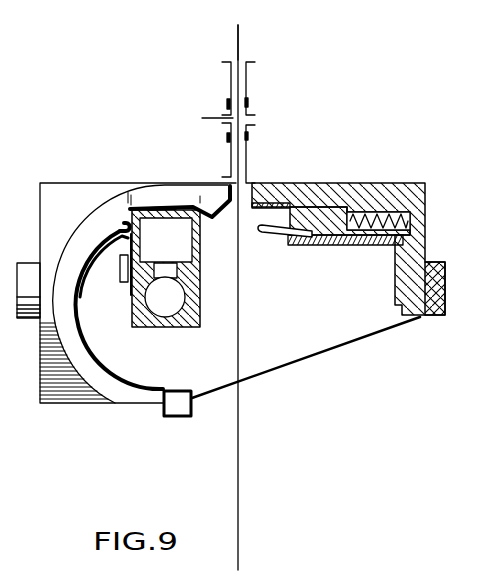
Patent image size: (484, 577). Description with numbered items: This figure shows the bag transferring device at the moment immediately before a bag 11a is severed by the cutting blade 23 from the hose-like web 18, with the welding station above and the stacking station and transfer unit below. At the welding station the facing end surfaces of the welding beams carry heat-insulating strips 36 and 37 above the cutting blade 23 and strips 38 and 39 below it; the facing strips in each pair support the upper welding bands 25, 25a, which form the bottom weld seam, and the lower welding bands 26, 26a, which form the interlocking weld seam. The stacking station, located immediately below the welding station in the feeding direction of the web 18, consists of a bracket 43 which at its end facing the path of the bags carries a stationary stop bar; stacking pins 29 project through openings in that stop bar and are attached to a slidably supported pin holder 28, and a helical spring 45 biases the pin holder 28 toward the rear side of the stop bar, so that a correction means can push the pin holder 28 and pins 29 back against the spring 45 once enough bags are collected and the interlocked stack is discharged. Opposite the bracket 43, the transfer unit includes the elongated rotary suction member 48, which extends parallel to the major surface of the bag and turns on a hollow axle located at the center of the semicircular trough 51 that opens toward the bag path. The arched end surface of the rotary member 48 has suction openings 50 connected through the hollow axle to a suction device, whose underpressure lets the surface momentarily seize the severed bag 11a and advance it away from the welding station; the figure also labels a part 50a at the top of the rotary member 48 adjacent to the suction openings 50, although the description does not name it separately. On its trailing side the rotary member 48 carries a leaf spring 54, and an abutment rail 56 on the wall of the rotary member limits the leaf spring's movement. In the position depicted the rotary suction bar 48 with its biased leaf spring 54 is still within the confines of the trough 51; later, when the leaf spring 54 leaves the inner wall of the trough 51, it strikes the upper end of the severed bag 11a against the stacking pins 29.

The bag 11a is at (240, 432).
The hose-like web 18 is at (240, 50).
The cutting blade 23 is at (202, 118).
The upper welding band 25 is at (227, 103).
The upper welding band 25a is at (248, 102).
The lower welding band 26 is at (227, 138).
The lower welding band 26a is at (248, 135).
The pin holder 28 is at (327, 218).
The stacking pins 29 is at (267, 240).
The insulating strip 36 is at (223, 73).
The insulating strip 37 is at (248, 75).
The insulating strip 38 is at (223, 163).
The insulating strip 39 is at (248, 162).
The bracket 43 is at (415, 247).
The helical spring 45 is at (385, 212).
The rotary suction member 48 is at (200, 288).
The suction openings 50 is at (185, 205).
The flange of cover sheet 50a is at (163, 207).
The trough 51 is at (123, 390).
The leaf spring 54 is at (87, 263).
The abutment rail 56 is at (123, 223).